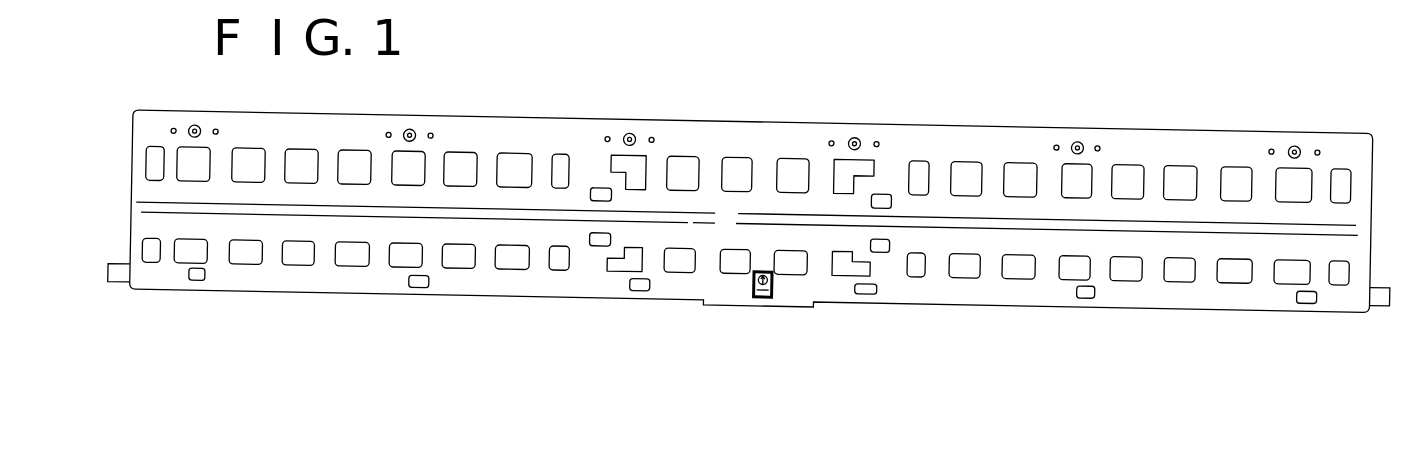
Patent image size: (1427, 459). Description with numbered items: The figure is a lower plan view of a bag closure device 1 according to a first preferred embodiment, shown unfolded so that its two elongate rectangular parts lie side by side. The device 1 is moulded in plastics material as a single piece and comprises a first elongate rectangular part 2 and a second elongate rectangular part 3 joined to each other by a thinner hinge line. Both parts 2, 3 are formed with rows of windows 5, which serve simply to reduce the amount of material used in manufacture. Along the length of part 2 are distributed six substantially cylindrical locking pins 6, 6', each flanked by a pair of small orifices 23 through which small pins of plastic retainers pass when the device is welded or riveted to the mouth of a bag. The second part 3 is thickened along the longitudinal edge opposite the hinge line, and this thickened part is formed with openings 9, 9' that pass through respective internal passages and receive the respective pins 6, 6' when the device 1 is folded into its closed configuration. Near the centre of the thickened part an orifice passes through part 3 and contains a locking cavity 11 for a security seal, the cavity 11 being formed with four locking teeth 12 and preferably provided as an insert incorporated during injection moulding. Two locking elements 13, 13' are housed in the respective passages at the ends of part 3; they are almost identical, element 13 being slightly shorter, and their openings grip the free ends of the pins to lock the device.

The closure device 1 is at (736, 103).
The first elongate rectangular part 2 is at (1360, 184).
The second elongate rectangular part 3 is at (1360, 248).
The windows 5 is at (972, 166).
The locking pin 6 is at (1075, 113).
The locking pin 6' is at (414, 107).
The opening 9 is at (1077, 332).
The opening 9' is at (623, 324).
The locking cavity 11 is at (757, 298).
The locking teeth 12 is at (771, 298).
The locking element 13 is at (1374, 331).
The locking element 13' is at (138, 310).
The small orifices 23 is at (607, 133).